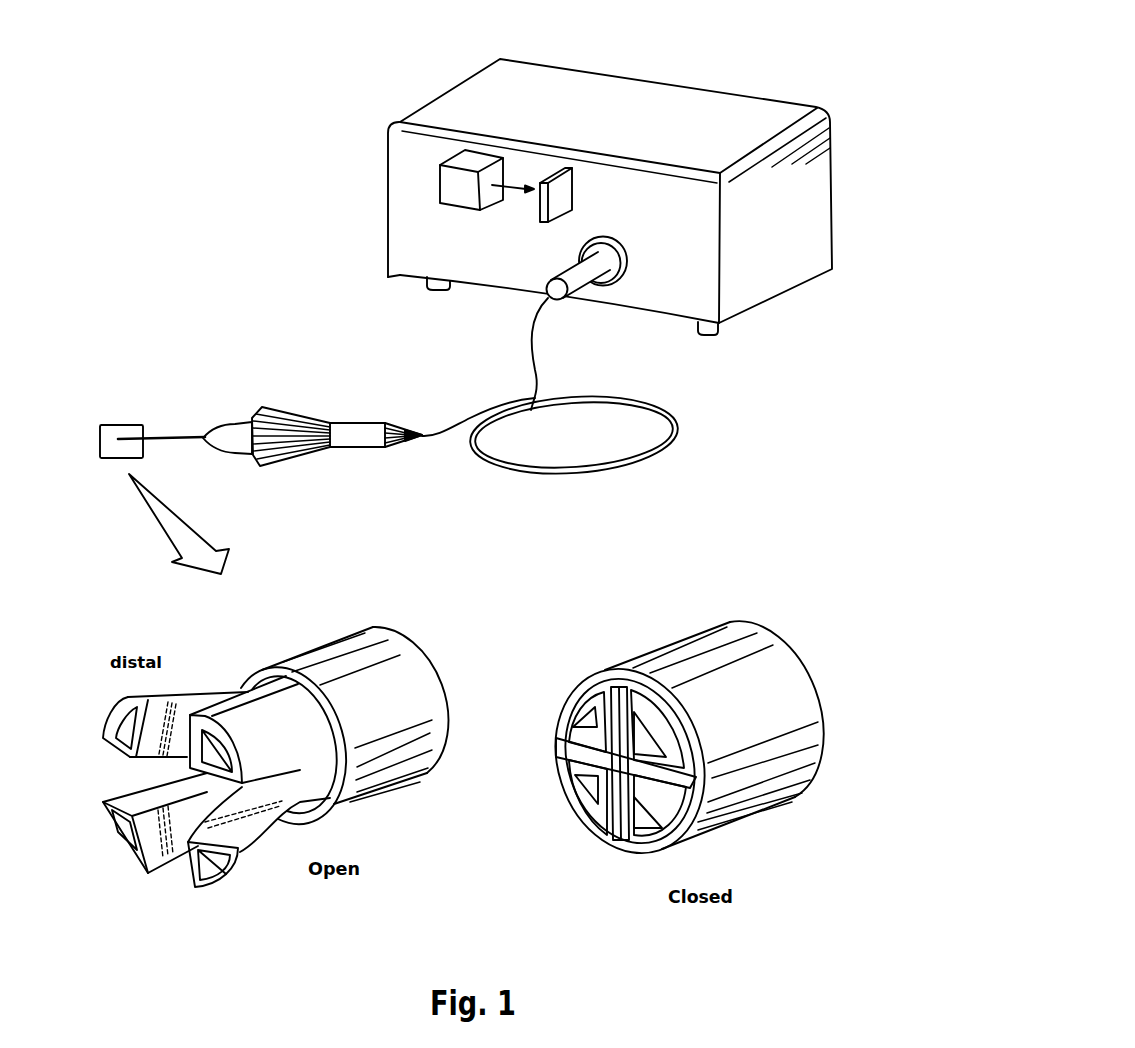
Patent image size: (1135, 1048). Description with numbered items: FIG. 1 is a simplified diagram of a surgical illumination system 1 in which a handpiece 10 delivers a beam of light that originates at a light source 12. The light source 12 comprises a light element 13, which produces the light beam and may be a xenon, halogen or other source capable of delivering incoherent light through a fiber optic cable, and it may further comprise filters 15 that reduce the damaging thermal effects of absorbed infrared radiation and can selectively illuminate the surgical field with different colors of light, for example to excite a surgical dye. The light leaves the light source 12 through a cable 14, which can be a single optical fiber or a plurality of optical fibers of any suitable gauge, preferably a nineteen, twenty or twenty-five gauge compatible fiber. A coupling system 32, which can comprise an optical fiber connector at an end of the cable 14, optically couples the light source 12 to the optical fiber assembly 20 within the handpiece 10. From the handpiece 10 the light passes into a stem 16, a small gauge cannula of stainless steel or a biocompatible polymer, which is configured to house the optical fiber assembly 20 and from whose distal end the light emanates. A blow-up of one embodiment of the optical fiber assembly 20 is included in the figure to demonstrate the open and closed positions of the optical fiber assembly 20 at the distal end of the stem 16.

The system 1 is at (733, 60).
The light source 12 is at (380, 157).
The light element 13 is at (457, 221).
The filters 15 is at (563, 195).
The coupling system 32 is at (616, 270).
The cable 14 is at (648, 462).
The handpiece 10 is at (290, 412).
The stem 16 is at (155, 432).
The optical fiber assembly 20 is at (238, 658).